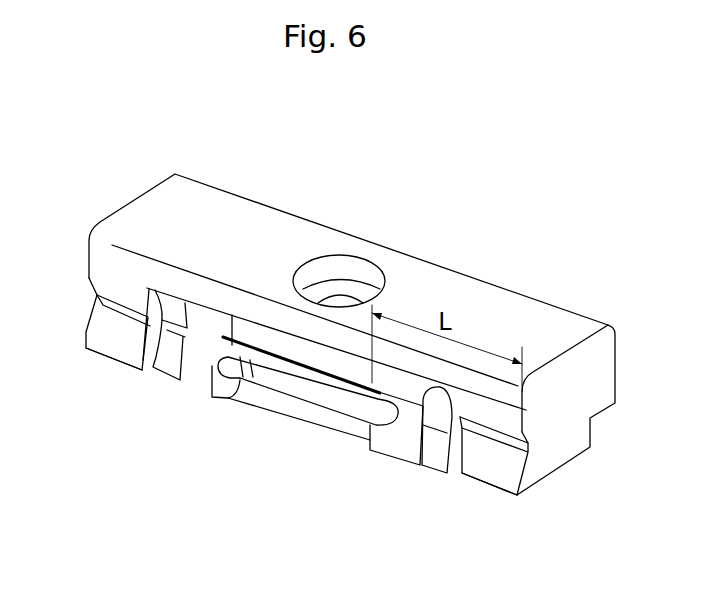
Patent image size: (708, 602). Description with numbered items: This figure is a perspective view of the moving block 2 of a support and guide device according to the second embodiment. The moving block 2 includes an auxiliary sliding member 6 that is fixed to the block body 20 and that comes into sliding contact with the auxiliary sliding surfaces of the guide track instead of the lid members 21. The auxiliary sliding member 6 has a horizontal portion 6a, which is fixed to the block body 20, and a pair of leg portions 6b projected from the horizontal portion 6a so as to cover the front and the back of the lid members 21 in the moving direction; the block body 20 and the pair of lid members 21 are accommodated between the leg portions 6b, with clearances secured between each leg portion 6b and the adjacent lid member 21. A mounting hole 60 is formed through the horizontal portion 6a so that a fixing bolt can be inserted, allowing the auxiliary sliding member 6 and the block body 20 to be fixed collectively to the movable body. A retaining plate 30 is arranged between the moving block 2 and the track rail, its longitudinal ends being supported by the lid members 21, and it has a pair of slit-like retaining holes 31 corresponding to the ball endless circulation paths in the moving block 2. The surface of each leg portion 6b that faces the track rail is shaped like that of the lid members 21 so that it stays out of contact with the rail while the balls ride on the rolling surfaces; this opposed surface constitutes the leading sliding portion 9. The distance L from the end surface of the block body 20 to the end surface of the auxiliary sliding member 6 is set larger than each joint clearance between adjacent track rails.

The moving block 2 is at (540, 247).
The auxiliary sliding member 6 is at (248, 198).
The horizontal portion 6a is at (434, 290).
The leg portions 6b is at (99, 357).
The leading sliding portion 9 is at (105, 328).
The block body 20 is at (277, 387).
The lid members 21 is at (162, 380).
The retaining plate 30 is at (387, 442).
The retaining holes 31 is at (212, 368).
The mounting hole 60 is at (340, 253).